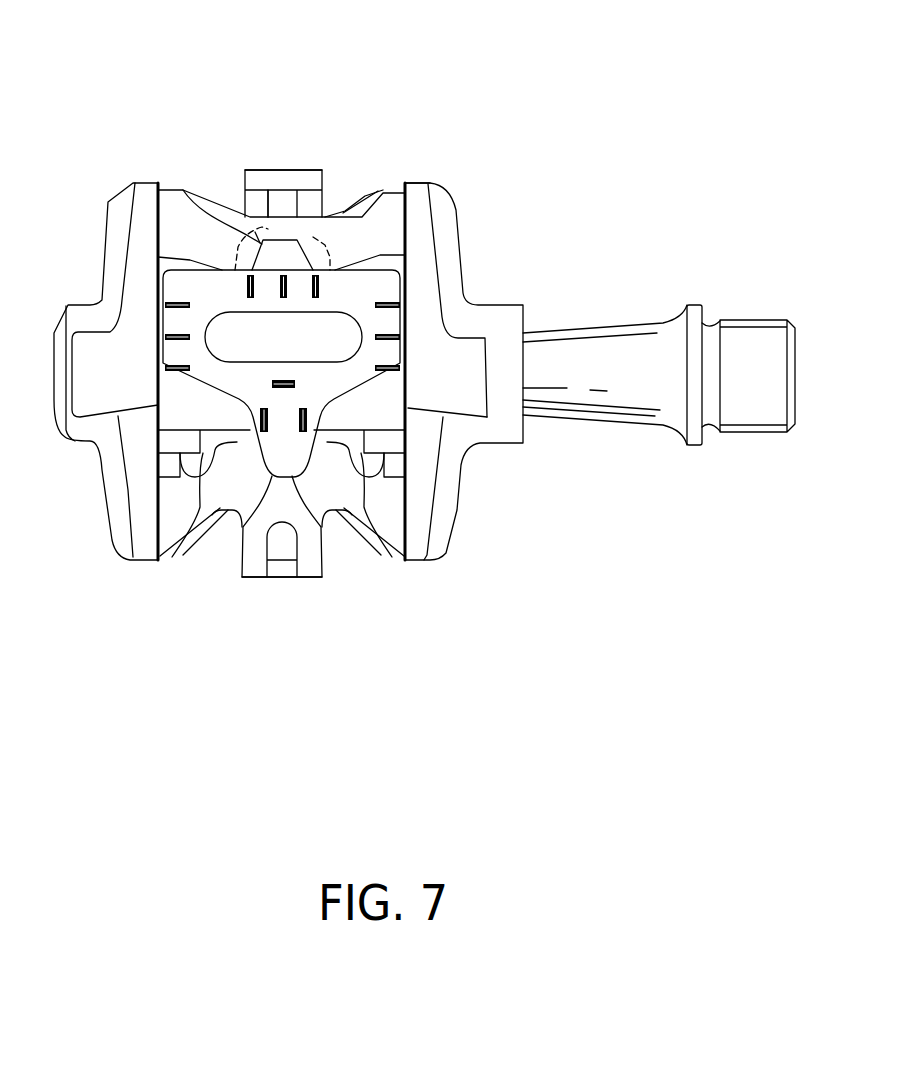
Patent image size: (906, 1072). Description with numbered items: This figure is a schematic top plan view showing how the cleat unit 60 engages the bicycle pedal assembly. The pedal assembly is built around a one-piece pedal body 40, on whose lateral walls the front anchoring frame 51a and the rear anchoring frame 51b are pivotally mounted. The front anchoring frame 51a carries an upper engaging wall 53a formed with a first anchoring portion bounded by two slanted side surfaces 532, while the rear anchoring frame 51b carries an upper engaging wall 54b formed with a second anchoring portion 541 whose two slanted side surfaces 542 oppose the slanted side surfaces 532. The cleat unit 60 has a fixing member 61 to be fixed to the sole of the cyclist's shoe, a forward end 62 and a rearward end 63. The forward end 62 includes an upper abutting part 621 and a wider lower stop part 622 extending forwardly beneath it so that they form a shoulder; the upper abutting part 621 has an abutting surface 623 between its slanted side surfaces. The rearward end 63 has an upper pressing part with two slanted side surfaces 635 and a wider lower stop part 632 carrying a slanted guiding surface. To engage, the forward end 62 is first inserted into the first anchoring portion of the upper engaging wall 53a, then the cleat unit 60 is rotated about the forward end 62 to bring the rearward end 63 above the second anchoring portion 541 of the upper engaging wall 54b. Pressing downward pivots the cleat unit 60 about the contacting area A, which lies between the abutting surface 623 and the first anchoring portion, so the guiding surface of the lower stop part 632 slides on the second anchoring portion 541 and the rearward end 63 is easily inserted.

The one-piece pedal body 40 is at (458, 214).
The front anchoring frame 51a is at (398, 183).
The rear anchoring frame 51b is at (258, 578).
The upper engaging wall 53a is at (360, 200).
The slanted side surfaces 532 is at (301, 212).
The upper engaging wall 54b is at (387, 490).
The second anchoring portion 541 is at (322, 548).
The slanted side surfaces 542 is at (345, 540).
The cleat unit 60 is at (197, 385).
The fixing member 61 is at (177, 325).
The forward end 62 is at (190, 213).
The upper abutting part 621 is at (272, 252).
The lower stop part 622 is at (233, 170).
The abutting surface 623 is at (285, 195).
The rearward end 63 is at (225, 520).
The lower stop part 632 is at (195, 530).
The slanted side surfaces 635 is at (395, 553).
The contacting area A is at (260, 243).